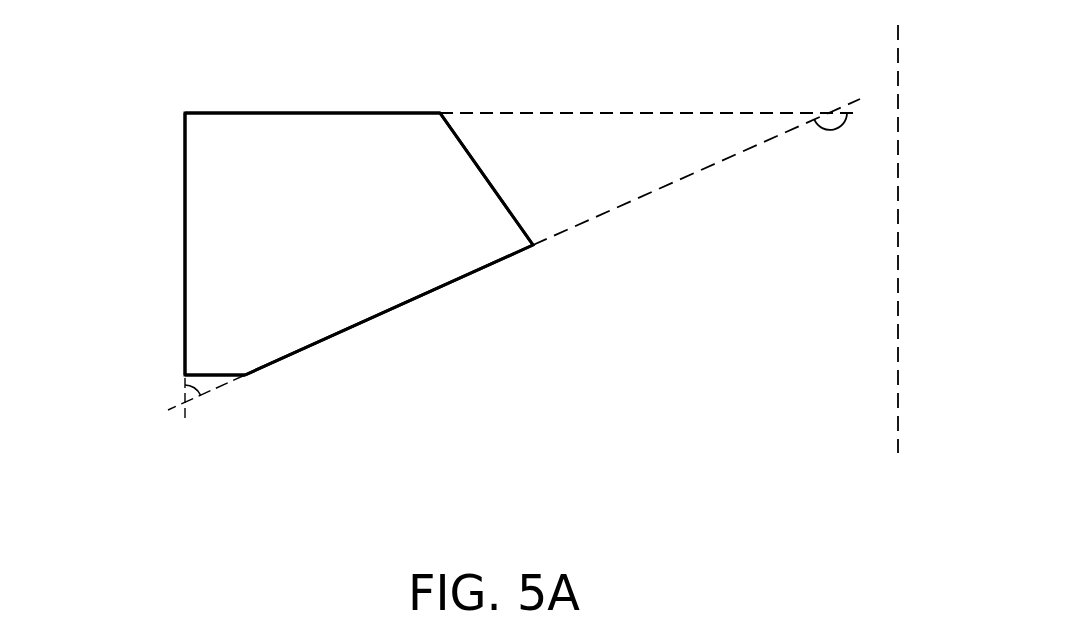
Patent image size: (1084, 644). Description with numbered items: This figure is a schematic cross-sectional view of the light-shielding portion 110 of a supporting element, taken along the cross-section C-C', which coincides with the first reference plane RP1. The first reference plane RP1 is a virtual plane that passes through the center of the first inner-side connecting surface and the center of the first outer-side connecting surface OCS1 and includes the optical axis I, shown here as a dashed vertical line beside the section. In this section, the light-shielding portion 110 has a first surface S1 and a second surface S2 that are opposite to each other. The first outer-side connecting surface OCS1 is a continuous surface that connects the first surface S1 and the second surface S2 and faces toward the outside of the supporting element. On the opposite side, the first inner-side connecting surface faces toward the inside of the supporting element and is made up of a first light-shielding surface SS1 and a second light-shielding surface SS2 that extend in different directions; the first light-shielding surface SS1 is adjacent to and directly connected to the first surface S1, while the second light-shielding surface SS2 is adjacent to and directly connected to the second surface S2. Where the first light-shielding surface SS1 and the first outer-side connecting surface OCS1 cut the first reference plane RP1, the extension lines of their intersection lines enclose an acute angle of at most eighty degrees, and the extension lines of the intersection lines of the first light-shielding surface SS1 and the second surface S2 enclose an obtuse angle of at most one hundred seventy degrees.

The light-shielding portion 110 is at (202, 140).
The second surface S2 is at (313, 111).
The first surface S1 is at (215, 379).
The first outer-side connecting surface OCS1 is at (182, 213).
The first light-shielding surface SS1 is at (415, 301).
The second light-shielding surface SS2 is at (488, 177).
The cross-section C-C' endpoint C is at (179, 49).
The cross-section C-C' endpoint C' is at (863, 47).
The optical axis I is at (900, 80).
The first reference plane RP1 is at (876, 505).